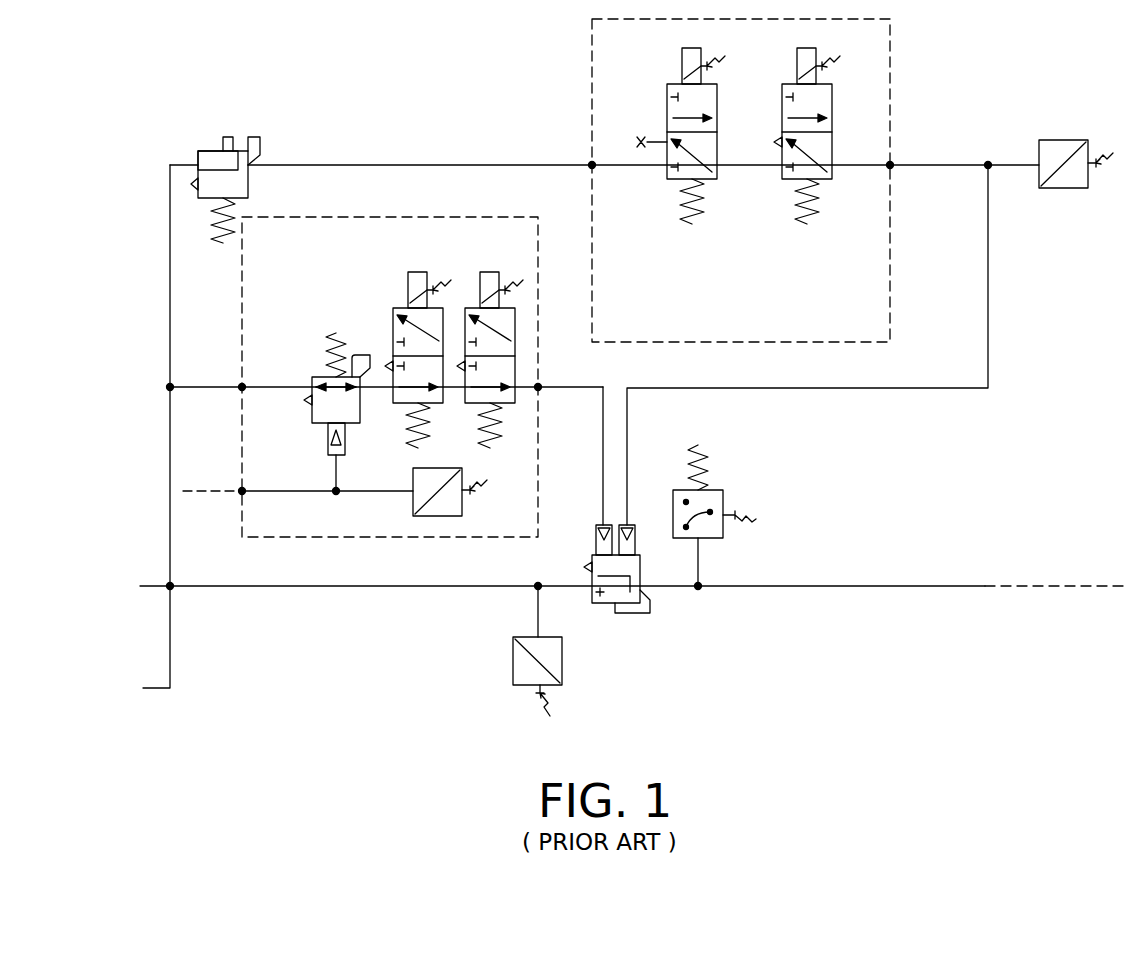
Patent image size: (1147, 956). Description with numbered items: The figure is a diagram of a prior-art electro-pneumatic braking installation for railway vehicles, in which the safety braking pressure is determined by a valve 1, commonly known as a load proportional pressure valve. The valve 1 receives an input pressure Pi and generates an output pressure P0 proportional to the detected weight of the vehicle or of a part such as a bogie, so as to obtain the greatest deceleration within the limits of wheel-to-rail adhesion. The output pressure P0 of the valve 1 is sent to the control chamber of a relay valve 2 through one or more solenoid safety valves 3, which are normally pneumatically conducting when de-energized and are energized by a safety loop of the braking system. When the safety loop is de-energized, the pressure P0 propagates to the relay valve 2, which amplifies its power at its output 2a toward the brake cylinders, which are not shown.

The valve (LPPV) 1 is at (332, 425).
The relay valve 2 is at (593, 566).
The output of the relay valve 2a is at (918, 588).
The solenoid safety valves 3 is at (398, 305).
The input pressure Pi is at (242, 387).
The output pressure P0 is at (392, 395).